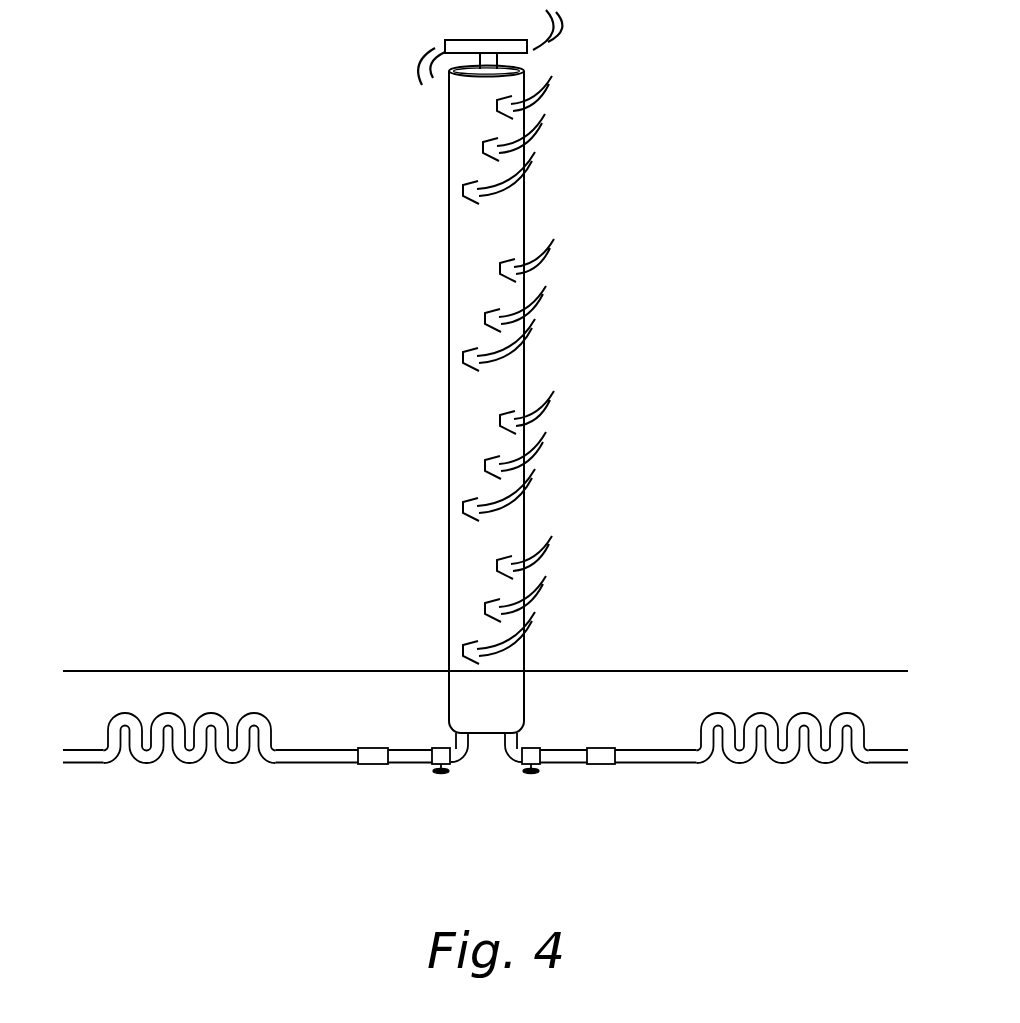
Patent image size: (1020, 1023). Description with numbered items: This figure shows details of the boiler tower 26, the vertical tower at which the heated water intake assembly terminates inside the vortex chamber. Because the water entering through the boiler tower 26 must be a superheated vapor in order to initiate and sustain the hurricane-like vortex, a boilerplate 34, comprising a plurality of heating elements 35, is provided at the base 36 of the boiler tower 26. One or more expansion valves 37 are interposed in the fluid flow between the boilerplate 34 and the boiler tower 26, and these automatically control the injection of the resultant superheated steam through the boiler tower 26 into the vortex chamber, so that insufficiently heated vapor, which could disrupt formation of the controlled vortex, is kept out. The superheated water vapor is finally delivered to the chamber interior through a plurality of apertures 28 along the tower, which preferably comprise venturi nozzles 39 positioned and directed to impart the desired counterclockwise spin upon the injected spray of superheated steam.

The boiler tower 26 is at (611, 252).
The apertures 28 is at (461, 357).
The boilerplate 34 is at (225, 645).
The heating elements 35 is at (189, 770).
The base of the boiler tower 36 is at (546, 648).
The expansion valves 37 is at (377, 770).
The venturi nozzles 39 is at (461, 190).